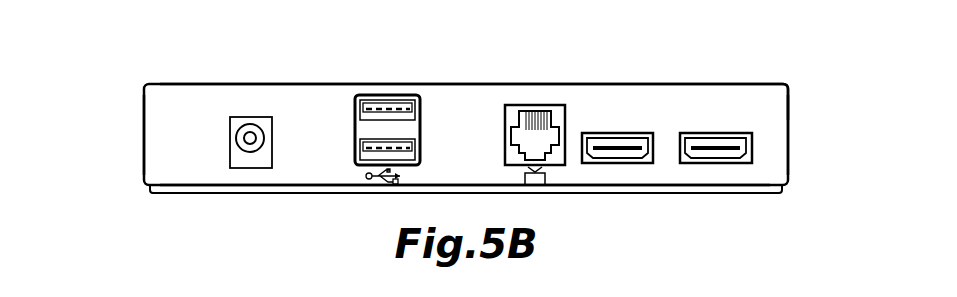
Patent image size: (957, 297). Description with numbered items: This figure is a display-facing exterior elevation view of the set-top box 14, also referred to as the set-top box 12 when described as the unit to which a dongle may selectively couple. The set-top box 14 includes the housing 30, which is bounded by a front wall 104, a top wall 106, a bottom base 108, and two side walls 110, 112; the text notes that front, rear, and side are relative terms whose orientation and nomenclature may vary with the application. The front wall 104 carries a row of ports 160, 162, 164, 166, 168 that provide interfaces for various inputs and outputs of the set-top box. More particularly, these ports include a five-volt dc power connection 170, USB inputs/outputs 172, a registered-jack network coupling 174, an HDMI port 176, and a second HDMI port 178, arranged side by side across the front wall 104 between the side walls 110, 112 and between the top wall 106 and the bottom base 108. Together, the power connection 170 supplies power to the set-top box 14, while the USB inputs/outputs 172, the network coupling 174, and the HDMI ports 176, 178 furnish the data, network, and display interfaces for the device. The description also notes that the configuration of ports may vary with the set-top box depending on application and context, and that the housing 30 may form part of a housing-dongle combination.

The set-top box 12 is at (168, 68).
The housing 30 is at (760, 76).
The set-top box 14 is at (155, 194).
The front wall 104 is at (198, 185).
The top wall 106 is at (214, 83).
The bottom base 108 is at (308, 194).
The side wall 110 is at (144, 137).
The side wall 112 is at (788, 137).
The port 160 is at (263, 119).
The port 162 is at (387, 96).
The port 164 is at (537, 106).
The port 166 is at (617, 134).
The port 168 is at (714, 134).
The 5V dc power connection 170 is at (248, 167).
The USB inputs/outputs 172 is at (367, 160).
The RJ-45 coupling 174 is at (555, 157).
The HDMI port 176 is at (647, 164).
The HDMI port 178 is at (745, 164).